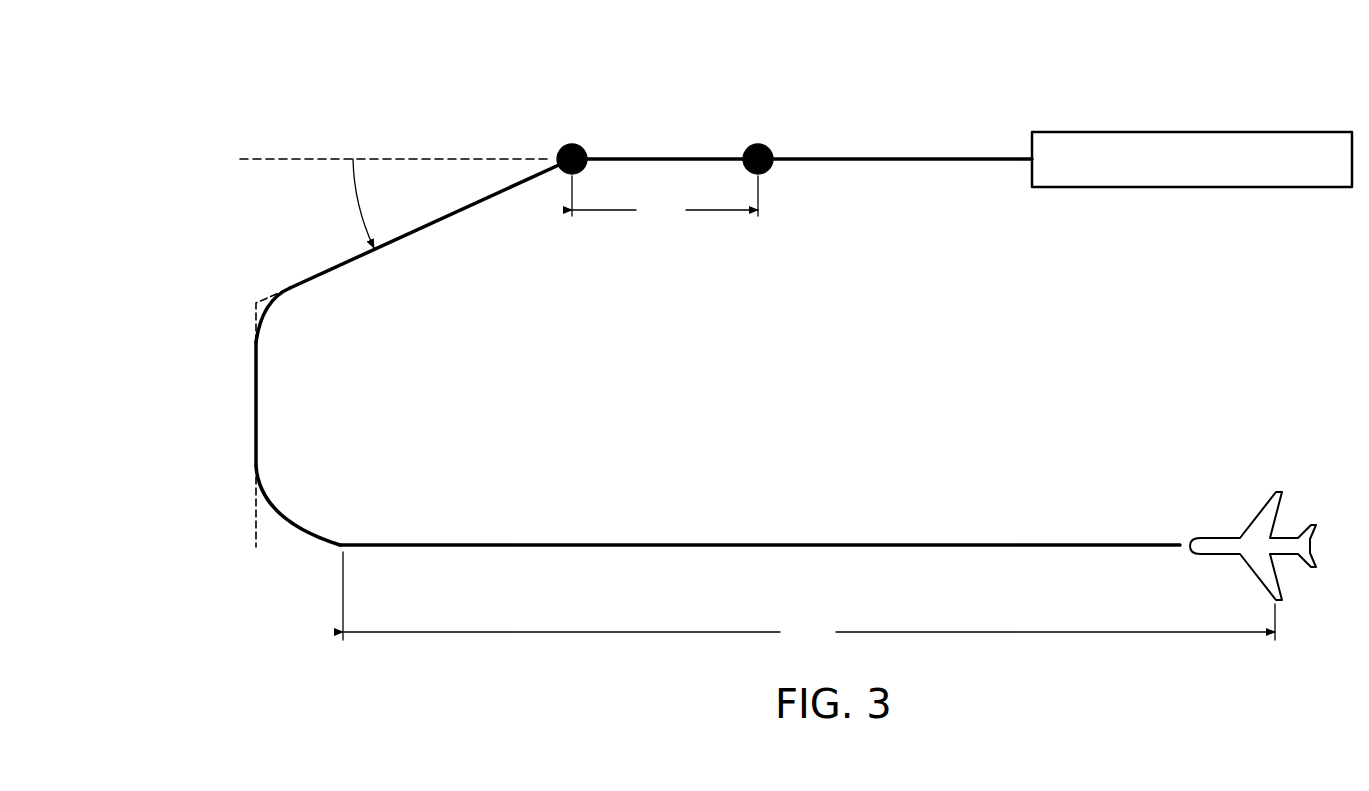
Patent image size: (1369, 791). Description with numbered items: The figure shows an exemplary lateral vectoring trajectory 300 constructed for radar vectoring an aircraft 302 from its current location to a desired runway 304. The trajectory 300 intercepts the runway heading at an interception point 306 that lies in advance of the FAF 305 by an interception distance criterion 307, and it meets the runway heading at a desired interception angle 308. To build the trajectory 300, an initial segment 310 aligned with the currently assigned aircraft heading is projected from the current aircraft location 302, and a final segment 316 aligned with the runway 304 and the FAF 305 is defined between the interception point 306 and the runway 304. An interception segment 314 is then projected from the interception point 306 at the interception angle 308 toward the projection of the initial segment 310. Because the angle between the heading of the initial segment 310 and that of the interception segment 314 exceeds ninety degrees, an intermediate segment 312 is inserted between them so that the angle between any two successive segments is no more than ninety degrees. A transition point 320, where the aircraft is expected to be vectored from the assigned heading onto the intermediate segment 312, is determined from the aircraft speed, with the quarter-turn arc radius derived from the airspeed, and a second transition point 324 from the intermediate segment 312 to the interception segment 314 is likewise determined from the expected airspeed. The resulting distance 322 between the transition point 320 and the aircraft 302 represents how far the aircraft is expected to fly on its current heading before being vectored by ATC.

The lateral vectoring trajectory 300 is at (238, 297).
The aircraft 302 is at (1278, 490).
The runway 304 is at (1175, 132).
The FAF 305 is at (762, 145).
The interception point 306 is at (576, 145).
The interception distance criterion 307 is at (665, 200).
The interception angle 308 is at (352, 195).
The initial segment 310 is at (640, 545).
The intermediate segment 312 is at (256, 434).
The interception segment 314 is at (466, 208).
The final segment 316 is at (668, 158).
The transition point 320 is at (334, 548).
The distance 322 is at (809, 599).
The second transition point 324 is at (256, 342).